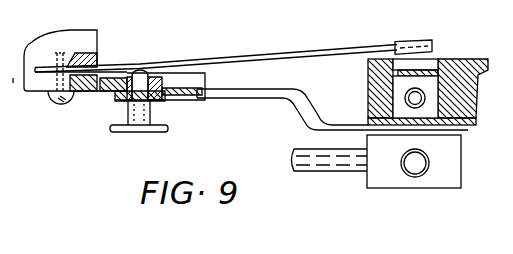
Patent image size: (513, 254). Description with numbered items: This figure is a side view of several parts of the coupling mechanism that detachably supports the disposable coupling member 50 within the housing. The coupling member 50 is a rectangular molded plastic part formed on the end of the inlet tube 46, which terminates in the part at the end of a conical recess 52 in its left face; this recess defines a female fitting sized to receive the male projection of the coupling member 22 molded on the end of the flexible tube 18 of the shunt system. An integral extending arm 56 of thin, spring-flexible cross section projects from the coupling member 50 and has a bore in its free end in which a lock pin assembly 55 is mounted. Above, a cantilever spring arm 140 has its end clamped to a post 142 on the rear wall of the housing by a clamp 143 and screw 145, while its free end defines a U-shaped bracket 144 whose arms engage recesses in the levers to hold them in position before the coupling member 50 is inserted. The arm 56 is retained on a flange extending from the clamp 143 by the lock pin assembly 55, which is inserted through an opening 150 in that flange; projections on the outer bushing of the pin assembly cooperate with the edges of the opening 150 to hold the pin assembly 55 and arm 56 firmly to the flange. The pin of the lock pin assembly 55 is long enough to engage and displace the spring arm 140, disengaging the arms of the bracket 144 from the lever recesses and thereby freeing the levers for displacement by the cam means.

The flexible tube 18 is at (397, 95).
The coupling member 22 is at (427, 89).
The inlet tube 46 is at (335, 172).
The coupling member 50 is at (442, 182).
The conical recess 52 is at (413, 177).
The lock pin assembly 55 is at (160, 132).
The extending arm 56 is at (247, 97).
The cantilever spring arm 140 is at (258, 53).
The post 142 is at (92, 42).
The clamp 143 is at (30, 83).
The U-shaped bracket 144 is at (413, 42).
The screw 145 is at (62, 107).
The opening 150 is at (150, 79).